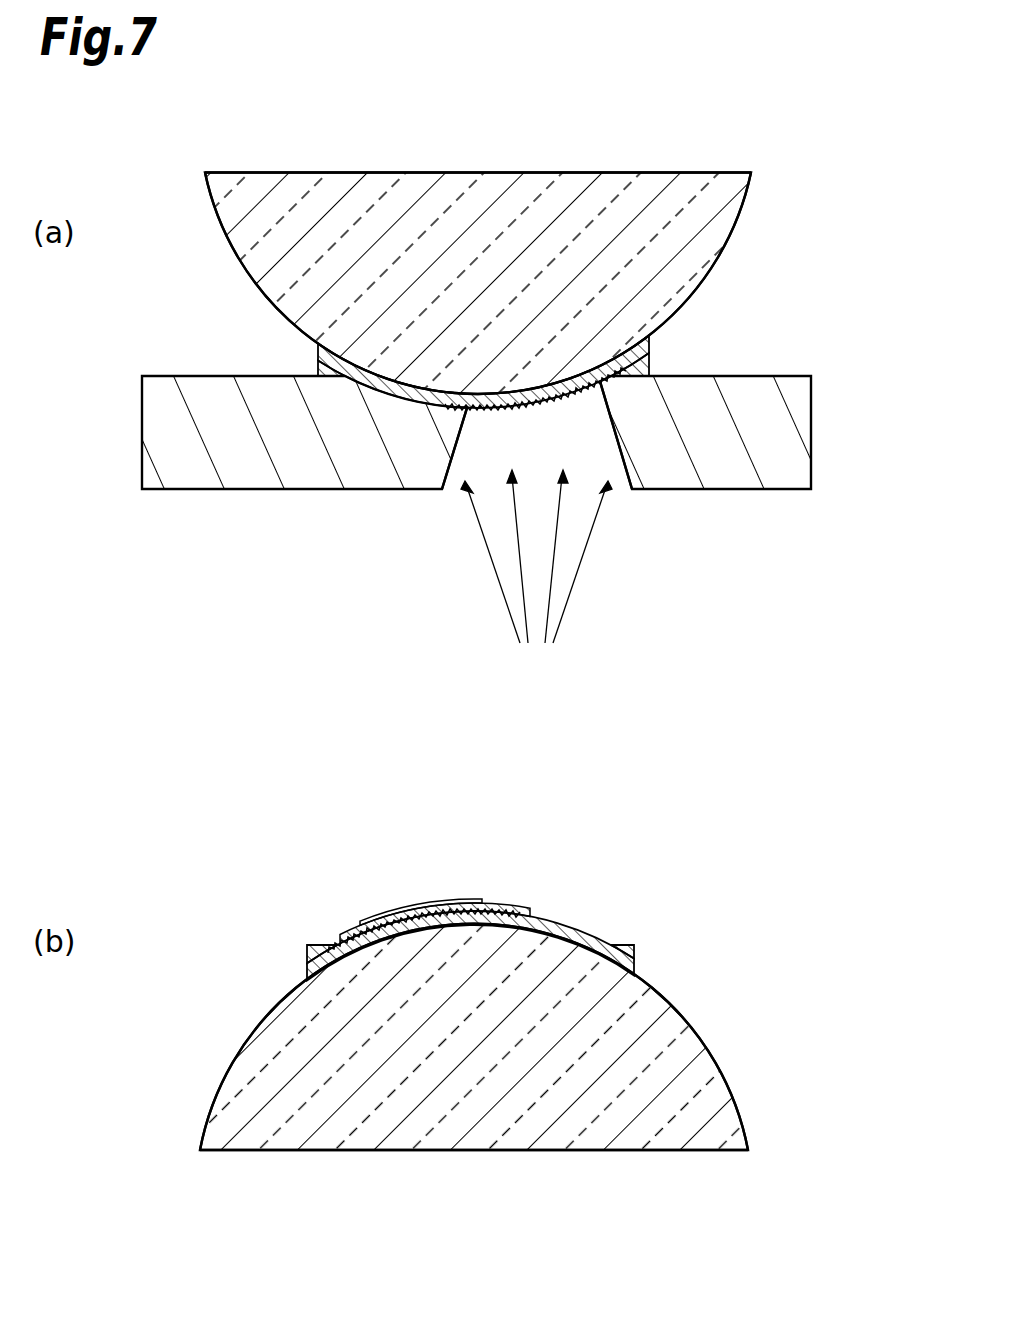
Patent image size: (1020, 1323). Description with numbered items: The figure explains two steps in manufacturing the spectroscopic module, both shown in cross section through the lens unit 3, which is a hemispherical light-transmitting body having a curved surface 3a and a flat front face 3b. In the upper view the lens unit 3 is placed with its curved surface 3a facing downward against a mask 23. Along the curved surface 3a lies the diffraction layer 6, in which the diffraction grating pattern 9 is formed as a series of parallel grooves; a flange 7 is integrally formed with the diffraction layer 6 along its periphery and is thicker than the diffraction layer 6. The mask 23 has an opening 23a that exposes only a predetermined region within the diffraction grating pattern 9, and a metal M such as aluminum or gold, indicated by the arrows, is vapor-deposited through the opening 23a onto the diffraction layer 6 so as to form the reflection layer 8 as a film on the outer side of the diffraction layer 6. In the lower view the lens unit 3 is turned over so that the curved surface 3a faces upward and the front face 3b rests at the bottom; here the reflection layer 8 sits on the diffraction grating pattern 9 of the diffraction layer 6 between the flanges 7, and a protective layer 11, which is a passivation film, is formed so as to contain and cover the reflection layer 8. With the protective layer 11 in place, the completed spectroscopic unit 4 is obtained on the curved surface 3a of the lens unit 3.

The lens unit 3 is at (258, 269).
The curved surface 3a is at (267, 300).
The front face 3b is at (650, 173).
The spectroscopic unit 4 is at (464, 887).
The diffraction layer 6 is at (495, 399).
The flange 7 is at (646, 351).
The reflection layer 8 is at (403, 912).
The diffraction grating pattern 9 is at (548, 400).
The protective layer 11 is at (430, 906).
The mask 23 is at (802, 442).
The opening 23a is at (625, 468).
The metal M is at (536, 577).